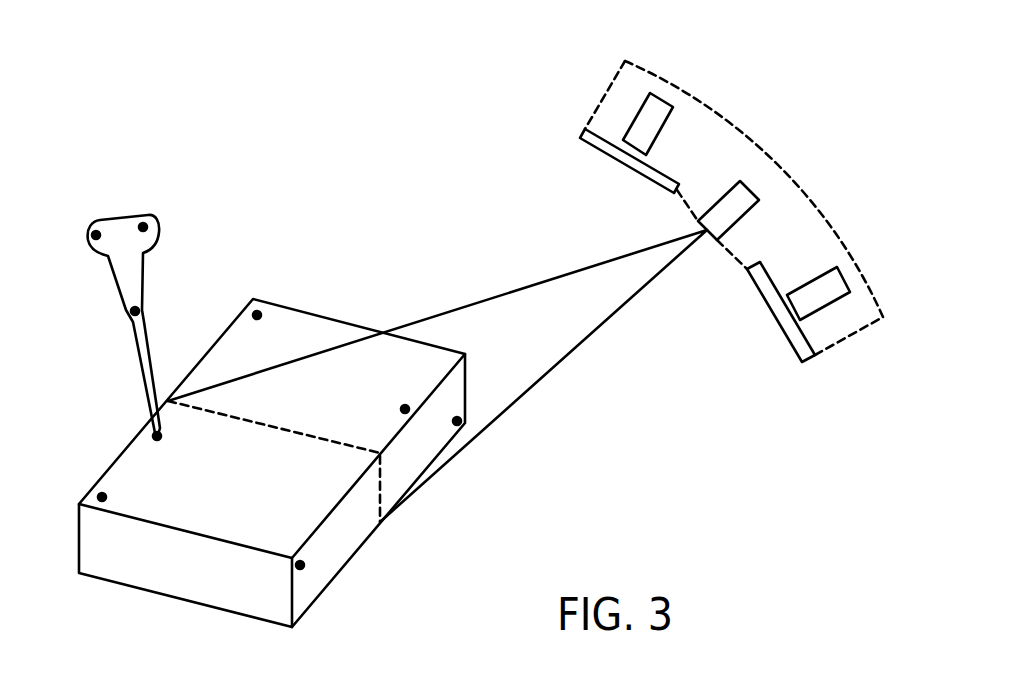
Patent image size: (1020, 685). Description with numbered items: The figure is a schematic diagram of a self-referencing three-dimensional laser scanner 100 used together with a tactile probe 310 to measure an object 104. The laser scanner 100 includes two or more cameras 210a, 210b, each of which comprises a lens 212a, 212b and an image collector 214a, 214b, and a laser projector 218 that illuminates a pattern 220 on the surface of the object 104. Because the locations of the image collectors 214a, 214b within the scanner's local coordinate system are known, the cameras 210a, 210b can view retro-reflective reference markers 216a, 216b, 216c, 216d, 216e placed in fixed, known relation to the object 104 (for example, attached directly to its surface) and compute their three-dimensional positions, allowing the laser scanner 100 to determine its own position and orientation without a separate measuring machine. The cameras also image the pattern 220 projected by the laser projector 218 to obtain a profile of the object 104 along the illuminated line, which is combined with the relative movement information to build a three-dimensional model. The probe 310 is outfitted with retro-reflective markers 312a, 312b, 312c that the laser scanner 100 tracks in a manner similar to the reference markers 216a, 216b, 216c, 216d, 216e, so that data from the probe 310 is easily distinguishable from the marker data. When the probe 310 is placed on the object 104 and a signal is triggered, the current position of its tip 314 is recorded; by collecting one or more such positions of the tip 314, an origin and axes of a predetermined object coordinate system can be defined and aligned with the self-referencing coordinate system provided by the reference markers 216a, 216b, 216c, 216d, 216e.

The self-referencing 3-D laser scanner 100 is at (883, 320).
The object 104 is at (213, 345).
The camera 210a is at (608, 192).
The camera 210b is at (766, 342).
The lens 212a is at (583, 134).
The lens 212b is at (807, 363).
The image collector 214a is at (662, 99).
The image collector 214b is at (843, 278).
The reference marker 216a is at (259, 312).
The reference marker 216b is at (458, 418).
The reference marker 216c is at (405, 409).
The reference marker 216d is at (102, 494).
The reference marker 216e is at (303, 567).
The laser projector 218 is at (748, 189).
The pattern 220 is at (378, 497).
The probe 310 is at (123, 216).
The retro-reflective marker 312a is at (93, 230).
The retro-reflective marker 312b is at (148, 226).
The retro-reflective marker 312c is at (130, 311).
The tip 314 is at (161, 438).